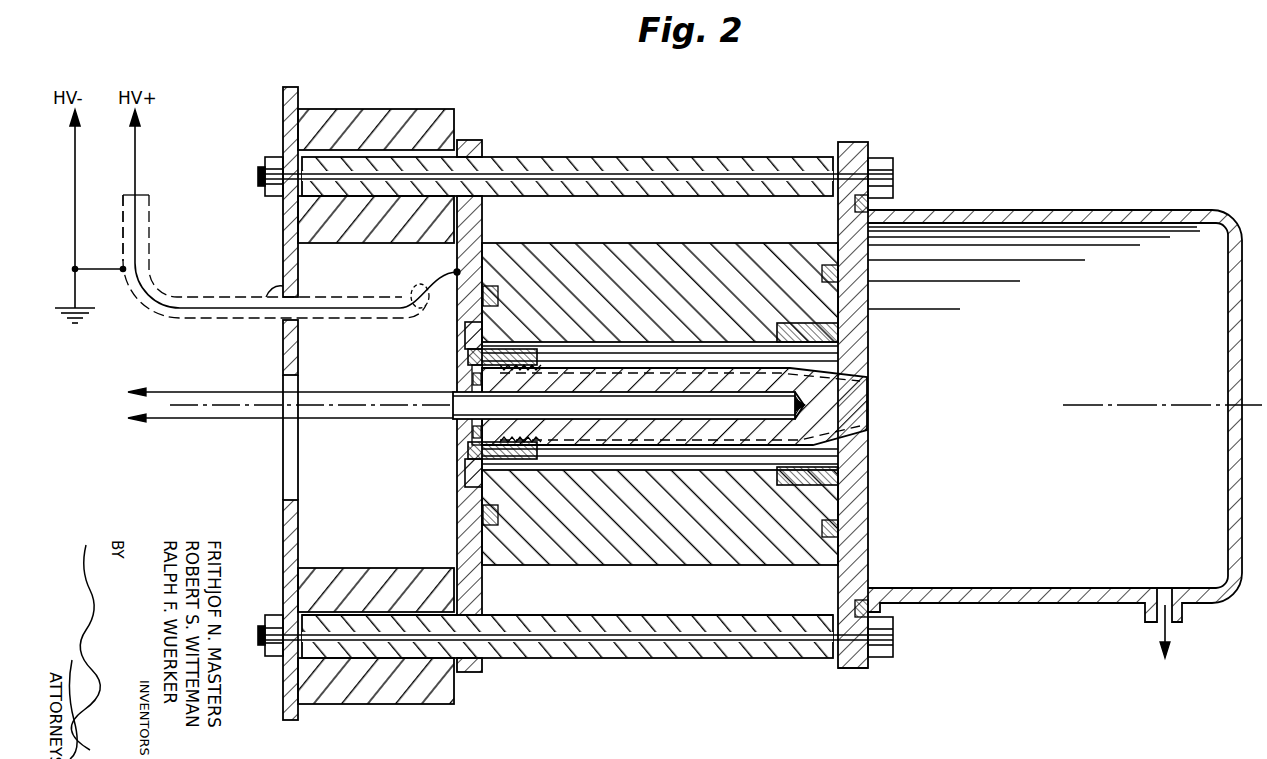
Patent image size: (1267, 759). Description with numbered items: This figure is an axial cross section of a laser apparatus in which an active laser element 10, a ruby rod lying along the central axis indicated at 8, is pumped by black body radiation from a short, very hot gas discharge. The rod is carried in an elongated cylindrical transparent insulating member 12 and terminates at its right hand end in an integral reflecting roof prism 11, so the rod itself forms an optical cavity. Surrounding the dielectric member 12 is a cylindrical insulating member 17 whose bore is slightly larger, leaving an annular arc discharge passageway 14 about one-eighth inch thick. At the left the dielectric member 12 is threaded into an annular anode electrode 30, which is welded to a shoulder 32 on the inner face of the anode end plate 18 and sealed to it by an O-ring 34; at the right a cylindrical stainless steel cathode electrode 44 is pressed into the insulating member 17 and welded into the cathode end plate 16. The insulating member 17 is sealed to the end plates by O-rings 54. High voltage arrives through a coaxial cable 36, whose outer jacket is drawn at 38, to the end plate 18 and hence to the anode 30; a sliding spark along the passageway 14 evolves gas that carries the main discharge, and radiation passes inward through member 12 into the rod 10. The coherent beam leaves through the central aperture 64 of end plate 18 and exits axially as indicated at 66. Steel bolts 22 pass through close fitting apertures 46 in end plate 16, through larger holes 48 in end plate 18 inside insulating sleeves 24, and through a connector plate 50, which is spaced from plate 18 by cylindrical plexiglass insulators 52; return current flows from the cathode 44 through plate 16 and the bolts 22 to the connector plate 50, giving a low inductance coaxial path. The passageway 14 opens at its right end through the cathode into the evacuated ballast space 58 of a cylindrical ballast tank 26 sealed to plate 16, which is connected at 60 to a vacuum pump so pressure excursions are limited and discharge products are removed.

The optical axis 8 is at (1165, 405).
The active laser element 10 is at (622, 396).
The integral reflecting roof prism 11 is at (800, 432).
The transparent insulating member 12 is at (858, 407).
The annular arc discharge passageway 14 is at (852, 364).
The end plate 16 is at (846, 142).
The cylindrical insulating member 17 is at (618, 243).
The end plate 18 is at (470, 140).
The steel bolts 22 is at (612, 172).
The insulating sleeve 24 is at (678, 157).
The cylindrical ballast tank 26 is at (1178, 210).
The anode electrode 30 is at (470, 452).
The shoulder 32 is at (468, 484).
The O-ring 34 is at (476, 358).
The coaxial cable 36 is at (187, 296).
The insulating tube 38 is at (148, 234).
The cathode electrode 44 is at (845, 470).
The apertures 46 is at (842, 660).
The holes 48 is at (482, 614).
The connector plate 50 is at (292, 87).
The cylindrical plexiglass insulators 52 is at (386, 110).
The O-rings 54 is at (496, 286).
The evacuated ballast space 58 is at (1076, 537).
The vacuum pump connection 60 is at (1148, 614).
The central aperture 64 is at (462, 424).
The laser beam output 66 is at (192, 418).